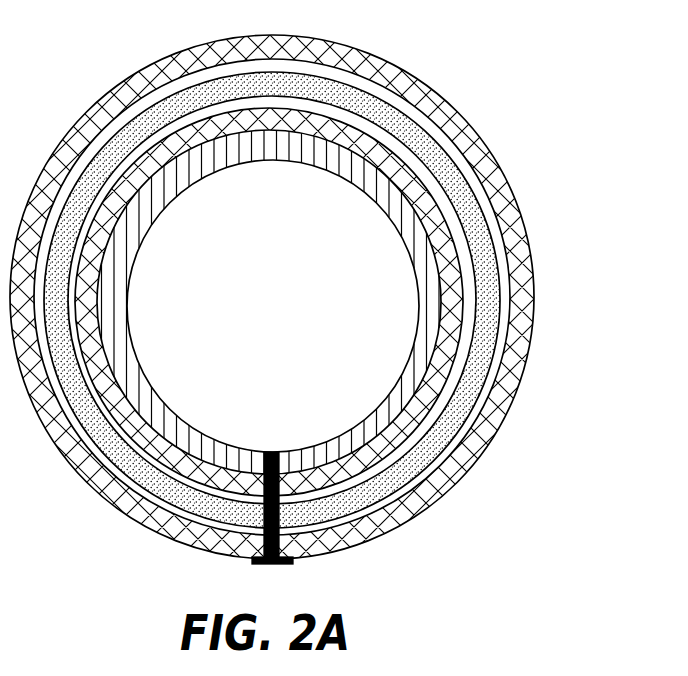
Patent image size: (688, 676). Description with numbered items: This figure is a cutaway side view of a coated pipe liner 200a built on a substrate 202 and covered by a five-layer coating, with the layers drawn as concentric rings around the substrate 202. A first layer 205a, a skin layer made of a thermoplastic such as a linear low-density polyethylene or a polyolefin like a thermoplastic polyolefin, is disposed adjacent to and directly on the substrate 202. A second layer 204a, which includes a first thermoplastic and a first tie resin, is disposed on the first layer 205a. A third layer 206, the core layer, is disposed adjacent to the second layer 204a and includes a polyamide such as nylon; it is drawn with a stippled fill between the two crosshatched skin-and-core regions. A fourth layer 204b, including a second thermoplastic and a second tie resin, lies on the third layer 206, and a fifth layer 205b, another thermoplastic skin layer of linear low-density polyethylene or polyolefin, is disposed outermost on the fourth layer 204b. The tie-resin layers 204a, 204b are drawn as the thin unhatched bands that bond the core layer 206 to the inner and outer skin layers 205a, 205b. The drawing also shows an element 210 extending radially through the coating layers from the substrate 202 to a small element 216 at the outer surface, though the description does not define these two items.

The pipe liner 200a is at (541, 51).
The substrate 202 is at (385, 425).
The second layer 204a is at (467, 333).
The fourth layer 204b is at (503, 272).
The first layer 205a is at (448, 373).
The fifth layer 205b is at (485, 165).
The third layer 206 is at (468, 220).
The pull wire / conductor 210 is at (350, 548).
The anchor plate 216 is at (293, 562).